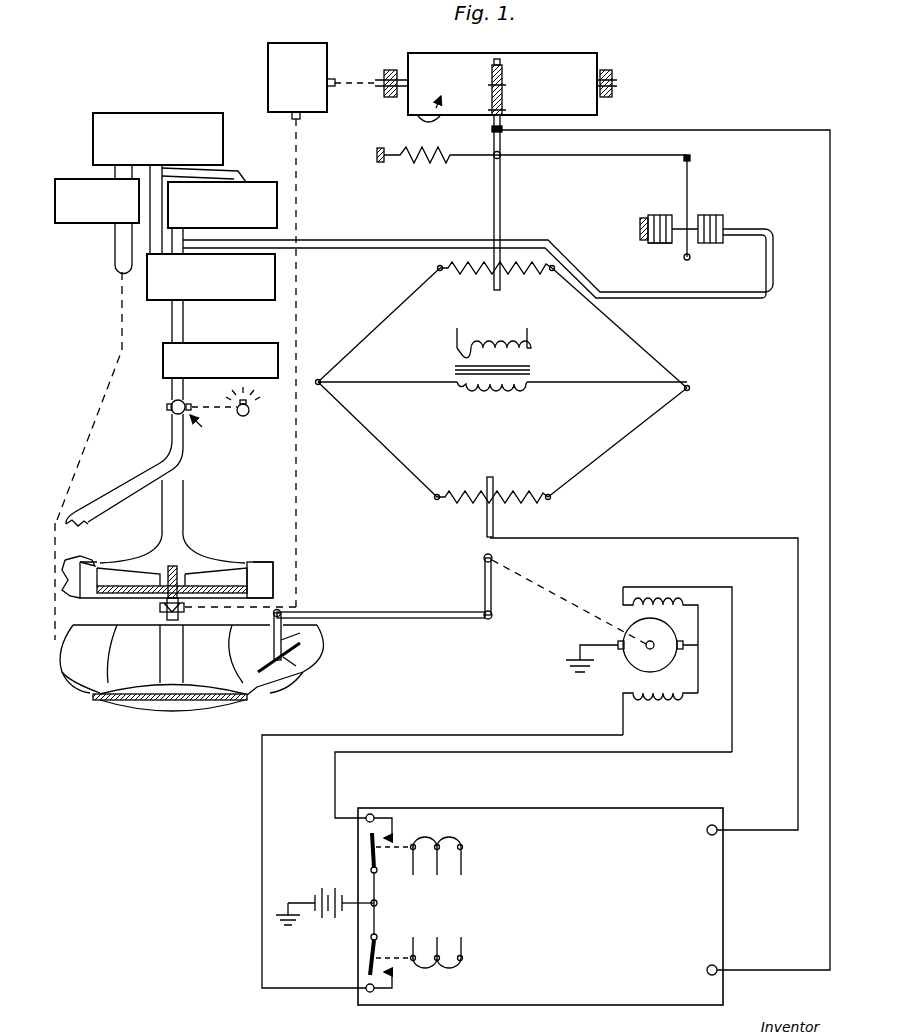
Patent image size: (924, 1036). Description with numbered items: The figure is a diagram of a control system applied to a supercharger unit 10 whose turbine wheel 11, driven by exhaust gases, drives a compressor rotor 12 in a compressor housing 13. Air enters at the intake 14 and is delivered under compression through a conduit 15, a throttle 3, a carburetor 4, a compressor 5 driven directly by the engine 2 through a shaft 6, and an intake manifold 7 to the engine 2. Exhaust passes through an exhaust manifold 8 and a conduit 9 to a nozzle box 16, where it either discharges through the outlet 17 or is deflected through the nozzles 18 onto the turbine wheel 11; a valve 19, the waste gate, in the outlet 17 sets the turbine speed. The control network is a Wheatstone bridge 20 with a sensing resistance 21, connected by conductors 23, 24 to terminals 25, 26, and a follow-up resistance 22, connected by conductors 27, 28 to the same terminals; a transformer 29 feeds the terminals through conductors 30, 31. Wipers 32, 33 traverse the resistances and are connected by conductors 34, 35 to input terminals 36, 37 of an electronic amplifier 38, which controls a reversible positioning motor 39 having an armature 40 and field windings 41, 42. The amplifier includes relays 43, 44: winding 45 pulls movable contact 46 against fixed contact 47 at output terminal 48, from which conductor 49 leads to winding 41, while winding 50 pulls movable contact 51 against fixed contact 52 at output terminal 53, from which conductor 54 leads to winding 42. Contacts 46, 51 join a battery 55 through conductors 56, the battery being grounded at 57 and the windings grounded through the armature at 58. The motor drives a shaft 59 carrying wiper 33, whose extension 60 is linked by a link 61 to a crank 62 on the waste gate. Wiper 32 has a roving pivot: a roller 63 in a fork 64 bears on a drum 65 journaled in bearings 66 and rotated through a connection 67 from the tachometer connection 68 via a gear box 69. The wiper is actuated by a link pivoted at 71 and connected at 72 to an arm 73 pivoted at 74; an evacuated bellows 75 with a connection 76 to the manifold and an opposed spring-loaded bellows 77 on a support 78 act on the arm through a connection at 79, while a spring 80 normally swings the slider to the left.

The engine 2 is at (190, 113).
The throttle 3 is at (170, 411).
The carburetor 4 is at (166, 380).
The compressor 5 is at (160, 302).
The shaft 6 is at (165, 170).
The intake manifold 7 is at (258, 182).
The exhaust manifold 8 is at (96, 224).
The conduit 9 is at (115, 268).
The supercharger unit 10 is at (206, 540).
The turbine wheel 11 is at (118, 701).
The compressor rotor 12 is at (166, 575).
The compressor housing 13 is at (256, 565).
The intake 14 is at (172, 486).
The conduit 15 is at (88, 522).
The nozzle box 16 is at (135, 650).
The outlet 17 is at (300, 645).
The nozzles 18 is at (92, 692).
The valve 19 is at (298, 660).
The Wheatstone bridge 20 is at (512, 382).
The sensing or control resistance 21 is at (480, 273).
The follow-up or rebalancing resistance 22 is at (515, 493).
The conductor 23 is at (380, 324).
The conductor 24 is at (636, 350).
The terminal 25 is at (319, 377).
The terminal 26 is at (689, 385).
The conductor 27 is at (400, 455).
The conductor 28 is at (610, 452).
The transformer 29 is at (538, 366).
The conductor 30 is at (388, 384).
The conductor 31 is at (588, 388).
The wiper or slider 32 is at (501, 221).
The wiper or slider 33 is at (485, 520).
The conductor 34 is at (755, 130).
The conductor 35 is at (735, 538).
The input terminal 36 is at (706, 970).
The input terminal 37 is at (708, 835).
The electronic amplifier 38 is at (499, 901).
The waste gate positioning motor 39 is at (631, 652).
The armature 40 is at (668, 660).
The field winding 41 is at (660, 600).
The field winding 42 is at (660, 696).
The relay 43 is at (455, 832).
The relay 44 is at (458, 975).
The winding 45 is at (437, 866).
The movable contact 46 is at (368, 850).
The fixed contact 47 is at (393, 830).
The output terminal 48 is at (373, 812).
The conductor 49 is at (530, 752).
The winding 50 is at (437, 939).
The movable contact 51 is at (367, 967).
The fixed contact 52 is at (395, 985).
The output terminal 53 is at (370, 994).
The conductor 54 is at (262, 860).
The battery 55 is at (330, 920).
The conductors 56 is at (380, 903).
The ground 57 is at (295, 900).
The ground 58 is at (575, 645).
The shaft 59 is at (482, 560).
The extension 60 is at (492, 598).
The link 61 is at (436, 619).
The crank 62 is at (300, 636).
The roller 63 is at (500, 60).
The fork 64 is at (490, 105).
The drum or cylinder 65 is at (428, 66).
The supports or bearings 66 is at (390, 98).
The connection 67 is at (296, 311).
The tachometer connection 68 is at (158, 608).
The gear box 69 is at (278, 100).
The pivot 71 is at (494, 160).
The connection 72 is at (692, 159).
The arm 73 is at (690, 181).
The pivot 74 is at (684, 260).
The evacuated bellows 75 is at (716, 214).
The connection 76 is at (376, 243).
The bellows 77 is at (660, 245).
The support 78 is at (640, 229).
The connection 79 is at (662, 215).
The spring 80 is at (432, 162).